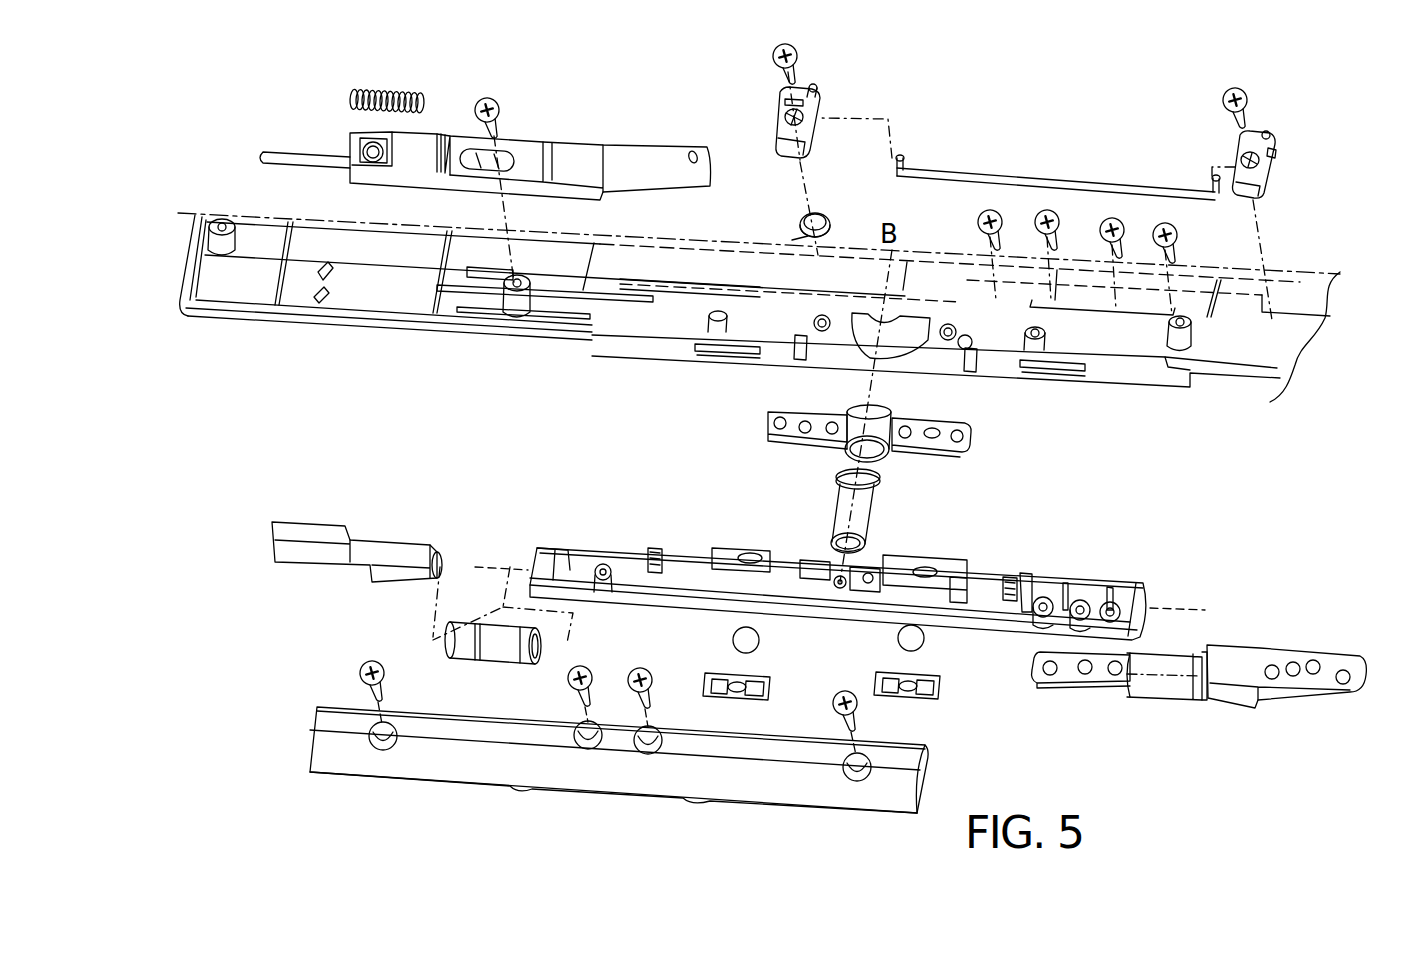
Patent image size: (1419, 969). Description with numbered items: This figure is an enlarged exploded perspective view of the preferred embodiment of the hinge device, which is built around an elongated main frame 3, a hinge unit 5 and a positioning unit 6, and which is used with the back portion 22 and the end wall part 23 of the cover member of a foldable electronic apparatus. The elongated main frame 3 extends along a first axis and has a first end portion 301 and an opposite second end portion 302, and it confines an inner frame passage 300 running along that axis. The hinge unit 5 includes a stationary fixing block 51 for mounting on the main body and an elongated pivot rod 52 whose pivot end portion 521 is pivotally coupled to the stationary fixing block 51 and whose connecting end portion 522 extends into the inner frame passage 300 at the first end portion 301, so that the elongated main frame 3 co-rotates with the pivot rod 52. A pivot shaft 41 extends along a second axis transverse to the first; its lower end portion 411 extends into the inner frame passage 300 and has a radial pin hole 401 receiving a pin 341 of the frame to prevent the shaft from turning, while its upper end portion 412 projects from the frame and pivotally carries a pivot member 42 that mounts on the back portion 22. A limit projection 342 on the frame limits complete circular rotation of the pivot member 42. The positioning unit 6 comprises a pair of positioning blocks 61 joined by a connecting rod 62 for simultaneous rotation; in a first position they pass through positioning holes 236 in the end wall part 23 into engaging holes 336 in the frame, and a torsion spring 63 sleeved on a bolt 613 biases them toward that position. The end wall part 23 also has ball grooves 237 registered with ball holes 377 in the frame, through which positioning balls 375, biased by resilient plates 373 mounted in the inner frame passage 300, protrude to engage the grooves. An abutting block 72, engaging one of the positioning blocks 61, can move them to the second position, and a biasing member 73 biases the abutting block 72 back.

The elongated main frame 3 is at (1114, 552).
The hinge unit 5 is at (1223, 673).
The positioning unit 6 is at (1038, 134).
The back portion 22 is at (1335, 316).
The end wall part 23 is at (1162, 380).
The pivot shaft 41 is at (844, 505).
The pivot member 42 is at (870, 408).
The stationary fixing block 51 is at (1360, 668).
The pivot rod 52 is at (1143, 683).
The positioning blocks 61 is at (777, 143).
The connecting rod 62 is at (995, 176).
The torsion spring 63 is at (800, 215).
The abutting block 72 is at (558, 106).
The biasing member 73 is at (388, 90).
The positioning holes 236 is at (712, 352).
The ball grooves 237 is at (795, 355).
The inner frame passage 300 is at (672, 587).
The first end portion 301 is at (1158, 595).
The second end portion 302 is at (540, 560).
The engaging holes 336 is at (672, 556).
The pin 341 is at (838, 592).
The limit projection 342 is at (875, 568).
The resilient plates 373 is at (738, 690).
The positioning balls 375 is at (733, 640).
The ball holes 377 is at (765, 560).
The pin hole 401 is at (852, 538).
The lower end portion 411 is at (834, 548).
The upper end portion 412 is at (820, 473).
The pivot end portion 521 is at (1177, 687).
The connecting end portion 522 is at (1052, 680).
The bolt 613 is at (773, 49).